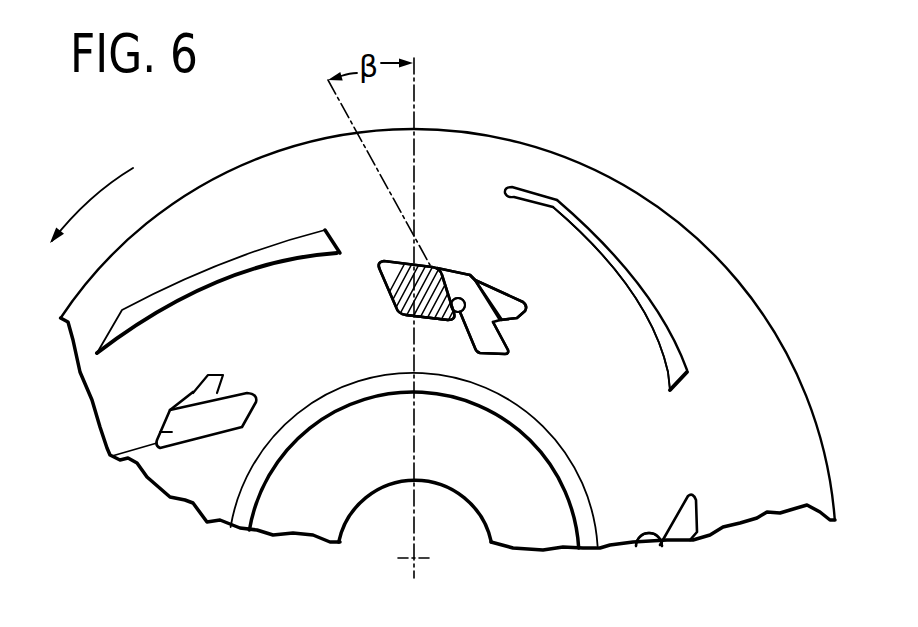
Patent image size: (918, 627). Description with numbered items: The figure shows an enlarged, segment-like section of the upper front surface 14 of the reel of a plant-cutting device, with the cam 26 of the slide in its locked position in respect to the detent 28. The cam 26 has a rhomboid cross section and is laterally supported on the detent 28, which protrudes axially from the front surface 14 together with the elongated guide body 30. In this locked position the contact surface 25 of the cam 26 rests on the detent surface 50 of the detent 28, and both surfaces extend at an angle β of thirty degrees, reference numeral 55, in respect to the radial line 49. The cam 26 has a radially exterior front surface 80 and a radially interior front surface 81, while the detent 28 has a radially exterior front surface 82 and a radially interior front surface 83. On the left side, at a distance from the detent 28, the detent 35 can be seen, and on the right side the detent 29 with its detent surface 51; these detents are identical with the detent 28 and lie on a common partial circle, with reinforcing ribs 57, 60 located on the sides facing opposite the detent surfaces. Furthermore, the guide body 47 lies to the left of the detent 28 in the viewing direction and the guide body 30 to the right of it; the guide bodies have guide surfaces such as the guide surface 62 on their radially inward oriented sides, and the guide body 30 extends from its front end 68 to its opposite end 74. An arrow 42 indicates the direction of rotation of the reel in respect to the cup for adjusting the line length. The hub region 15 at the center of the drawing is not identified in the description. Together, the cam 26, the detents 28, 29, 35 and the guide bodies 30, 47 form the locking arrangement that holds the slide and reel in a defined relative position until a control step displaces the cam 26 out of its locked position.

The upper front surface 14 is at (775, 482).
The hub 15 is at (585, 545).
The contact surface 25 is at (456, 324).
The cam 26 is at (380, 282).
The detent 28 is at (508, 337).
The detent 29 is at (670, 535).
The guide body 30 is at (623, 277).
The detent 35 is at (112, 456).
The arrow 42 is at (99, 197).
The guide body 47 is at (238, 256).
The radial line 49 is at (416, 92).
The detent surface 50 is at (469, 336).
The detent surface 51 is at (633, 545).
The angle β 55 is at (340, 76).
The reinforcing rib 57 is at (503, 303).
The reinforcing rib 60 is at (195, 392).
The guide surface 62 is at (652, 344).
The front end 68 is at (515, 183).
The end 74 is at (697, 383).
The radially exterior front surface 80 is at (395, 260).
The radially interior front surface 81 is at (422, 328).
The radially exterior front surface 82 is at (461, 270).
The radially interior front surface 83 is at (500, 355).